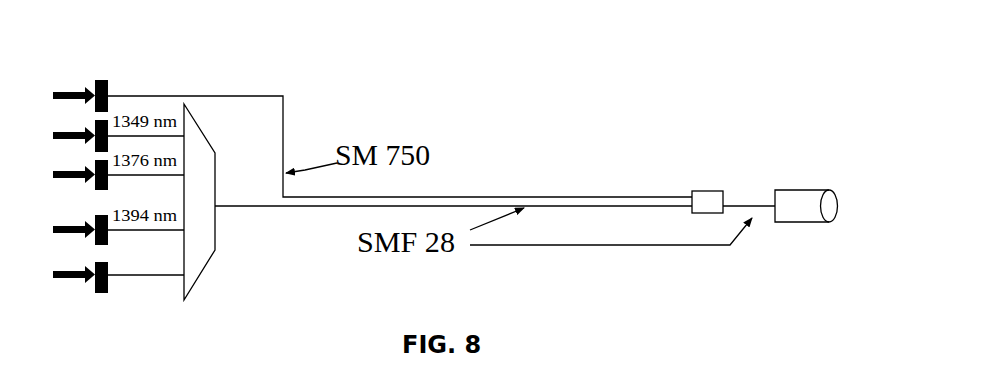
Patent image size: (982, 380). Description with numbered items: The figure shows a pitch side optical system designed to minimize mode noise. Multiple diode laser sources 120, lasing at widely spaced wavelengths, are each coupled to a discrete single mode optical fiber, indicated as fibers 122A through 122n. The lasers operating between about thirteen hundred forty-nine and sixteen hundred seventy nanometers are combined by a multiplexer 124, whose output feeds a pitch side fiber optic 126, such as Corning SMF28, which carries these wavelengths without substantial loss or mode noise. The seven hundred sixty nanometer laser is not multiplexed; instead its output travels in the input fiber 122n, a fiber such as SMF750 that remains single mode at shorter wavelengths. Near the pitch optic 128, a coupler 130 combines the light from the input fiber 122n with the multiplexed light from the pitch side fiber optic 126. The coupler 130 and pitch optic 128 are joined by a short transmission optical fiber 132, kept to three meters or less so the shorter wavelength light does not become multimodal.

The diode laser sources 120 is at (100, 293).
The single mode optical fiber 122A is at (135, 275).
The input fiber 122n is at (240, 96).
The multiplexer 124 is at (205, 265).
The pitch side fiber optic 126 is at (287, 206).
The pitch optic 128 is at (800, 222).
The coupler 130 is at (708, 215).
The transmission optical fiber 132 is at (755, 206).